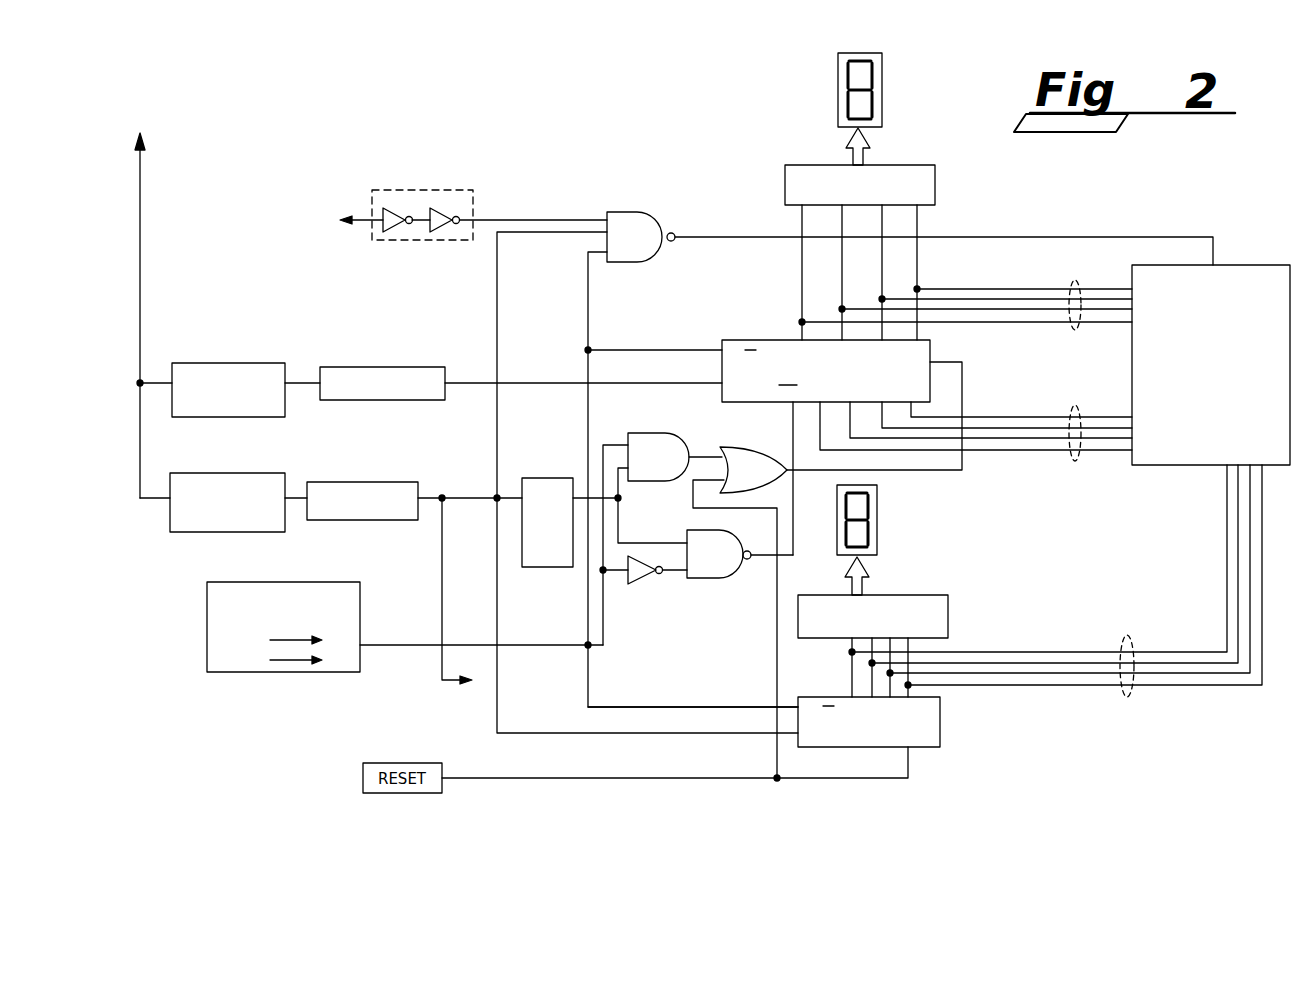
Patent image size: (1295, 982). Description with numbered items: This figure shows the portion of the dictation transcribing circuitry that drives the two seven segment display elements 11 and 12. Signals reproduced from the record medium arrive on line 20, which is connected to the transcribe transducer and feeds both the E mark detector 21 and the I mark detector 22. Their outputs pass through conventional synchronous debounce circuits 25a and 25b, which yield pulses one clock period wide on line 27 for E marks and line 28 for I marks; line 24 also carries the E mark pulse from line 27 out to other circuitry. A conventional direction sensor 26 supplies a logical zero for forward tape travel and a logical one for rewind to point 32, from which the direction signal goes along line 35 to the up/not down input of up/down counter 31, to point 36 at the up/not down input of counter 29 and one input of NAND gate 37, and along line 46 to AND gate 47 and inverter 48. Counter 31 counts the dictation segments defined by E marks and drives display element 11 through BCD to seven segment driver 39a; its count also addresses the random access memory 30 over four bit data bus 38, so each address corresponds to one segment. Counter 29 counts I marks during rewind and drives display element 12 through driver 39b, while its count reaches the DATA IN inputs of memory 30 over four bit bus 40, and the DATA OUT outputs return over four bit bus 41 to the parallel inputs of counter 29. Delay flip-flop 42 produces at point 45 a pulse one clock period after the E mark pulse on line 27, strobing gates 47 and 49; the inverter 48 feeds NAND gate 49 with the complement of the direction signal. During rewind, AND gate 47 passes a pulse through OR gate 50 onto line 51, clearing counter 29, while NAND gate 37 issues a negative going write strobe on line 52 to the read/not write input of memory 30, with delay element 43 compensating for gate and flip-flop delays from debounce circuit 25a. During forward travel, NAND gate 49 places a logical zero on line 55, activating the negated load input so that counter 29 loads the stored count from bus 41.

The display element 11 is at (877, 507).
The display element 12 is at (838, 88).
The input line 20 is at (160, 254).
The E mark detector 21 is at (255, 473).
The I mark detector 22 is at (259, 363).
The line 24 is at (442, 578).
The synchronous debounce circuit 25a is at (375, 482).
The synchronous debounce circuit 25b is at (393, 367).
The direction sensor 26 is at (282, 672).
The line 27 is at (471, 497).
The line 28 is at (467, 382).
The up/down counter 29 is at (780, 340).
The random access memory 30 is at (1170, 465).
The up/down counter 31 is at (940, 718).
The point 32 is at (590, 650).
The line 35 is at (730, 707).
The point 36 is at (588, 350).
The NAND gate 37 is at (630, 212).
The four bit data bus 38 is at (1136, 640).
The BCD to seven segment driver 39a is at (948, 614).
The BCD to seven segment driver 39b is at (785, 178).
The four bit data bus 40 is at (1075, 282).
The four bit data bus 41 is at (1075, 406).
The delay flip-flop 42 is at (552, 478).
The delay element 43 is at (428, 240).
The point 45 is at (650, 496).
The line 46 is at (612, 445).
The AND gate 47 is at (660, 433).
The inverter 48 is at (645, 590).
The NAND gate 49 is at (710, 578).
The OR gate 50 is at (733, 447).
The line 51 is at (942, 475).
The line 52 is at (715, 237).
The line 55 is at (795, 500).